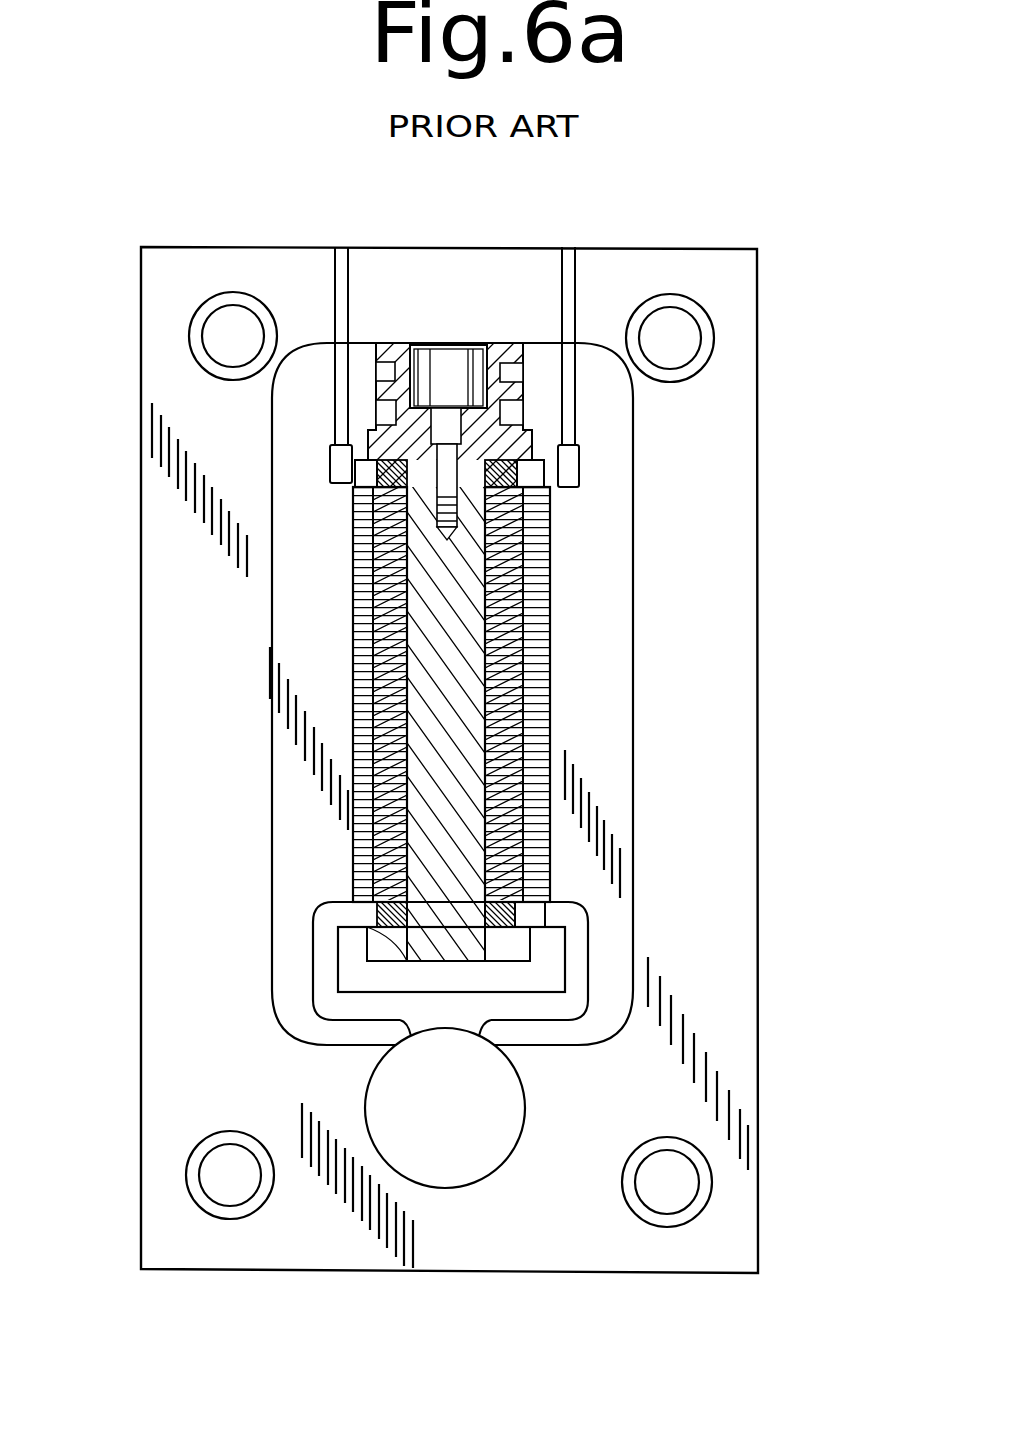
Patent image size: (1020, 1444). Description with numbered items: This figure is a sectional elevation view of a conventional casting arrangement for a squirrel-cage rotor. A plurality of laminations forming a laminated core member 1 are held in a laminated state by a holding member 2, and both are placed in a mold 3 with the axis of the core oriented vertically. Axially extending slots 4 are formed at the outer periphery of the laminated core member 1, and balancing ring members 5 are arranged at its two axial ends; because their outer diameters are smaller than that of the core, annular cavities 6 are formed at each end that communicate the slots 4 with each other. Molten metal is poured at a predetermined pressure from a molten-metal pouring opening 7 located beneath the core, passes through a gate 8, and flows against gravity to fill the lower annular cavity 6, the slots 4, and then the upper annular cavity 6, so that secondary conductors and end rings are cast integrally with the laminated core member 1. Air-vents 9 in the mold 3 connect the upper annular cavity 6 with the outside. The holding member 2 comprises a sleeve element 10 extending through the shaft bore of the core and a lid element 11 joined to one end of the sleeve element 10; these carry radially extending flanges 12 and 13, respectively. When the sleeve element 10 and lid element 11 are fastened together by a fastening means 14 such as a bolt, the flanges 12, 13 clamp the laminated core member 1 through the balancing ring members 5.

The laminated core member 1 is at (552, 638).
The holding member 2 is at (430, 710).
The mold 3 is at (637, 556).
The axially extending slots 4 is at (441, 700).
The balancing ring members 5 is at (365, 445).
The annular cavities 6 is at (530, 458).
The molten-metal pouring opening 7 is at (503, 1166).
The gate 8 is at (315, 958).
The air-vents 9 is at (337, 282).
The sleeve element 10 is at (424, 827).
The lid element 11 is at (462, 405).
The flange 12 is at (383, 942).
The flange 13 is at (524, 430).
The fastening means 14 is at (440, 430).